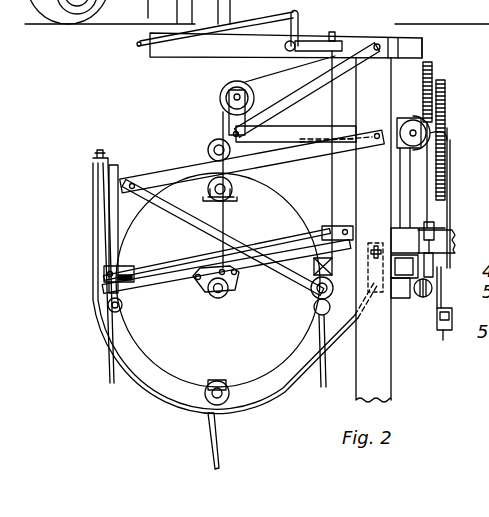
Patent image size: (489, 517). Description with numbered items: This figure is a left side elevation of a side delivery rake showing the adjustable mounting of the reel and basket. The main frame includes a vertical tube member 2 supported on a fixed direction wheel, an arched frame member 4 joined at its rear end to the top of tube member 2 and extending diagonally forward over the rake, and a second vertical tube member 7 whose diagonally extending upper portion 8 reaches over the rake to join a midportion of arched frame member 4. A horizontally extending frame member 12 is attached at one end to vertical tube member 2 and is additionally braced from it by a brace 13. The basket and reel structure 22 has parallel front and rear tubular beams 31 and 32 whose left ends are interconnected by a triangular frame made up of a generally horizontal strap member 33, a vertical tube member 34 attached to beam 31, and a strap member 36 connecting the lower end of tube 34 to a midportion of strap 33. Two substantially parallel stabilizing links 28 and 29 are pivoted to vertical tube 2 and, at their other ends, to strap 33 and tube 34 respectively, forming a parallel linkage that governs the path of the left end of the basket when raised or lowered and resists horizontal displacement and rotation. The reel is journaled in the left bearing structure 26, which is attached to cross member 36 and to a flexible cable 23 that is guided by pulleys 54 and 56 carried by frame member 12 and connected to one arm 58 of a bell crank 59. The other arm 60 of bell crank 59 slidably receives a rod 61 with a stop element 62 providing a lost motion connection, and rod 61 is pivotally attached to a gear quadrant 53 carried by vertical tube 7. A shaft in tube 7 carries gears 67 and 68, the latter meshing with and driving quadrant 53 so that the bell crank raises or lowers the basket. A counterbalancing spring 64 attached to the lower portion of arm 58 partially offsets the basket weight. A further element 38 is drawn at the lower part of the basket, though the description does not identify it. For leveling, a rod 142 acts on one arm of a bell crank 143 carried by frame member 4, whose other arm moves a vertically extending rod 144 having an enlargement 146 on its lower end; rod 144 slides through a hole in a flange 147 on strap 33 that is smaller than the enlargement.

The vertical tube member 2 is at (385, 378).
The arched frame member 4 is at (190, 51).
The vertical tube member 7 is at (393, 193).
The upper portion 8 is at (423, 50).
The horizontally extending frame member 12 is at (313, 125).
The brace 13 is at (326, 87).
The basket and reel structure 22 is at (140, 394).
The flexible cable 23 is at (266, 92).
The reel bearing structure 26 is at (249, 323).
The stabilizing link 28 is at (168, 176).
The stabilizing link 29 is at (173, 264).
The front tubular beam 31 is at (110, 163).
The rear tubular beam 32 is at (374, 258).
The strap member 33 is at (190, 219).
The vertical tube member 34 is at (108, 211).
The strap member 36 is at (153, 291).
The pulley 38 is at (283, 394).
The gear quadrant 53 is at (446, 128).
The pulley 54 is at (218, 98).
The pulley 56 is at (397, 149).
The arm 58 is at (421, 257).
The bell crank 59 is at (436, 264).
The arm 60 is at (433, 293).
The rod 61 is at (448, 222).
The stop element 62 is at (452, 320).
The spring 64 is at (398, 299).
The gear 67 is at (434, 76).
The gear 68 is at (446, 92).
The rod member 142 is at (224, 23).
The bell crank 143 is at (287, 47).
The vertically extending rod 144 is at (330, 188).
The enlargement 146 is at (339, 332).
The flange 147 is at (312, 278).